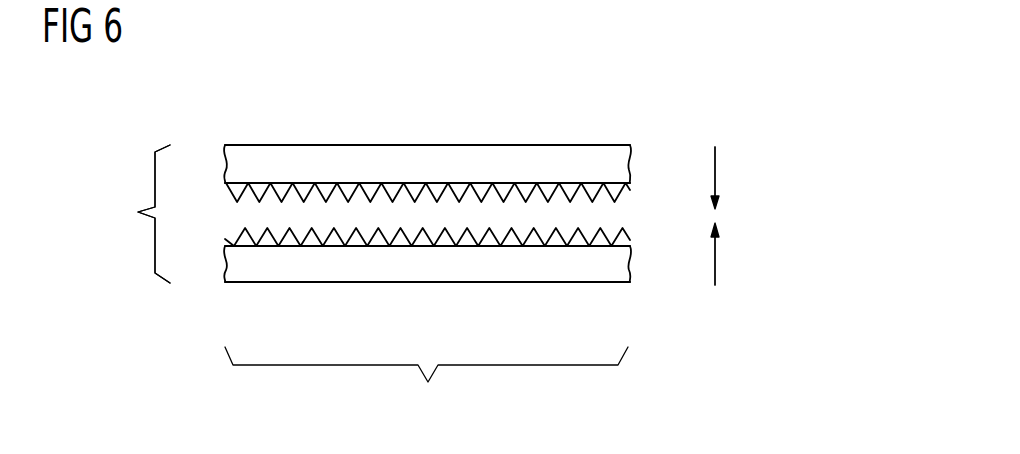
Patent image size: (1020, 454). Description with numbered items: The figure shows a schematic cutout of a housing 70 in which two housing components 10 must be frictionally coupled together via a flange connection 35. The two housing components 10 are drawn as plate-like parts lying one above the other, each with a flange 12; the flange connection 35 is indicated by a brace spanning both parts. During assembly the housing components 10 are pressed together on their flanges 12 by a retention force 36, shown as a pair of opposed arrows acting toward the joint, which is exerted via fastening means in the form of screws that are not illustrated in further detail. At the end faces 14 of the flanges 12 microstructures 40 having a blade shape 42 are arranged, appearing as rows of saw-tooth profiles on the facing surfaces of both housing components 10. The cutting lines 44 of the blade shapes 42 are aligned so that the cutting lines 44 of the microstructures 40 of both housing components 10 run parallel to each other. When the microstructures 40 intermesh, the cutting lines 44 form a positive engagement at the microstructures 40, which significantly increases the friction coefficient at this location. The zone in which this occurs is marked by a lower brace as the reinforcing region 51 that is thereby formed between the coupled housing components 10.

The housing component 10 is at (587, 145).
The flange 12 is at (517, 145).
The end face 14 is at (247, 203).
The flange connection 35 is at (116, 214).
The housing 70 is at (154, 214).
The retention force 36 is at (715, 170).
The microstructure 40 is at (442, 186).
The blade shape 42 is at (427, 125).
The cutting line 44 is at (368, 189).
The reinforcing region 51 is at (426, 381).